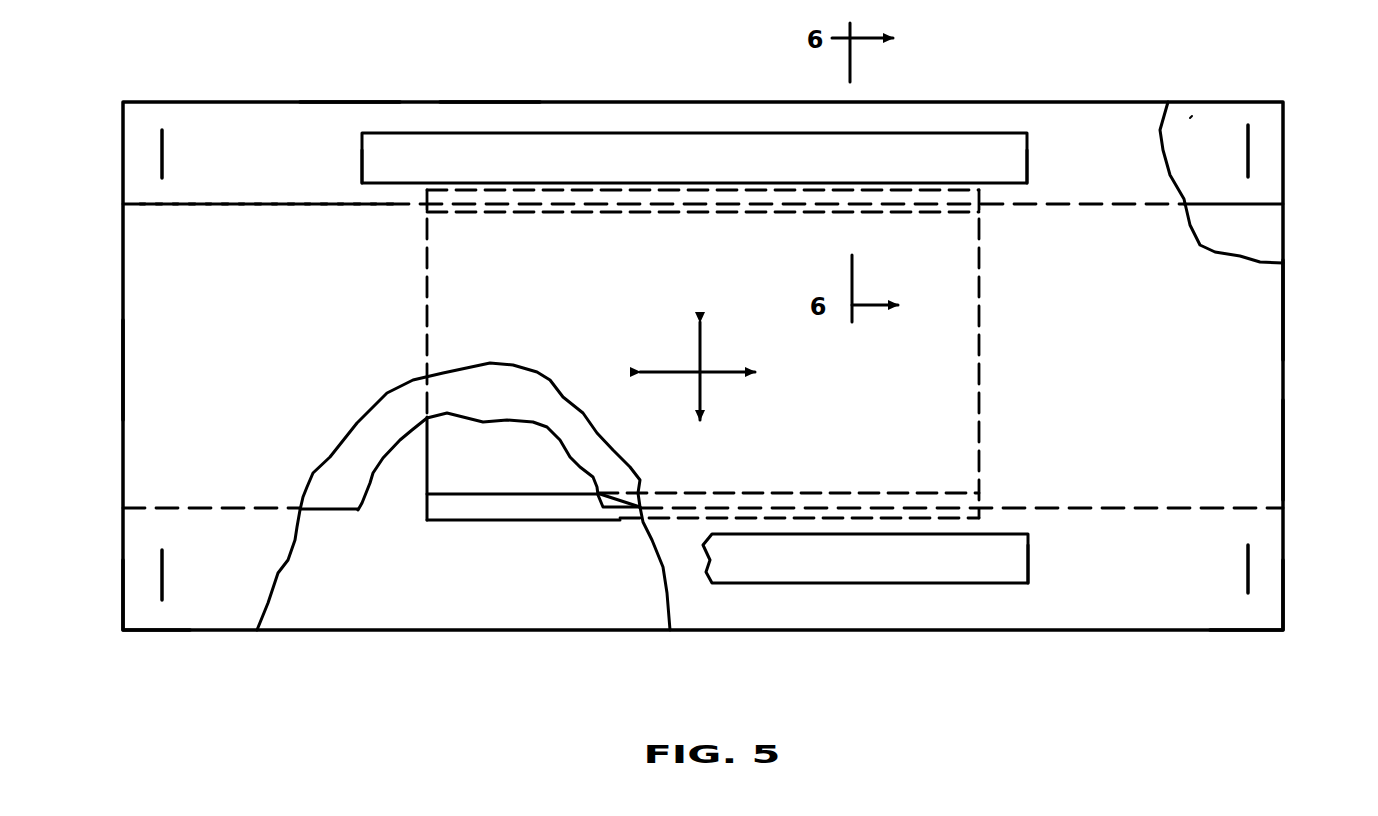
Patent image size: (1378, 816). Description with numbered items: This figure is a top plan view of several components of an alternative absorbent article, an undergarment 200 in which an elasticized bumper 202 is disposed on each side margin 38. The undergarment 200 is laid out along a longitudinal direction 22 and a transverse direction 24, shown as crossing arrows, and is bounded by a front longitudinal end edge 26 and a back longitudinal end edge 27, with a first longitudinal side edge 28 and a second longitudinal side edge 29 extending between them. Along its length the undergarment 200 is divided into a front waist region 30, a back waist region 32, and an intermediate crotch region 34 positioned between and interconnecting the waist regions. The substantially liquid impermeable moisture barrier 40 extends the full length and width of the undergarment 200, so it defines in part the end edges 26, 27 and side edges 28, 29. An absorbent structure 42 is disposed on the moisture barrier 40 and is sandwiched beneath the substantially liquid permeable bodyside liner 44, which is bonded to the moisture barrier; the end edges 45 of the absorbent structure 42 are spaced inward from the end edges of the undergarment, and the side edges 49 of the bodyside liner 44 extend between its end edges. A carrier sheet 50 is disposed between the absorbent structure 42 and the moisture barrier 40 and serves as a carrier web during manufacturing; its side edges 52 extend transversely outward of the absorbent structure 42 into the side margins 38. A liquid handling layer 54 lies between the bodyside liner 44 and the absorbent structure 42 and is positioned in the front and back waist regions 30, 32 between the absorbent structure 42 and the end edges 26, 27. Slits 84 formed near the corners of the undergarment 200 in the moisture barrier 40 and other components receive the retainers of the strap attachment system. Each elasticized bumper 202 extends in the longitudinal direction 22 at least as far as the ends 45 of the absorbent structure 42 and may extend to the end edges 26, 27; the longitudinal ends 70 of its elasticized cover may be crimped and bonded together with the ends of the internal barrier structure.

The undergarment 200 is at (250, 100).
The longitudinal axis 22 is at (680, 367).
The transverse axis 24 is at (703, 387).
The front longitudinal end edge 26 is at (1284, 443).
The back longitudinal end edge 27 is at (122, 571).
The first longitudinal side edge 28 is at (330, 102).
The second longitudinal side edge 29 is at (1183, 630).
The front waist region 30 is at (1292, 314).
The back waist region 32 is at (116, 373).
The crotch region 34 is at (478, 95).
The side margin 38 is at (1088, 115).
The moisture barrier 40 is at (1190, 118).
The absorbent structure 42 is at (466, 475).
The bodyside liner 44 is at (226, 410).
The end edges of absorbent structure 45 is at (982, 303).
The side edges of bodyside liner 49 is at (618, 510).
The carrier sheet 50 is at (477, 508).
The side edges of carrier sheet 52 is at (535, 522).
The liquid handling layer 54 is at (1223, 242).
The longitudinal ends of cover 70 is at (362, 160).
The slit 84 is at (163, 582).
The elasticized bumper 202 is at (588, 128).